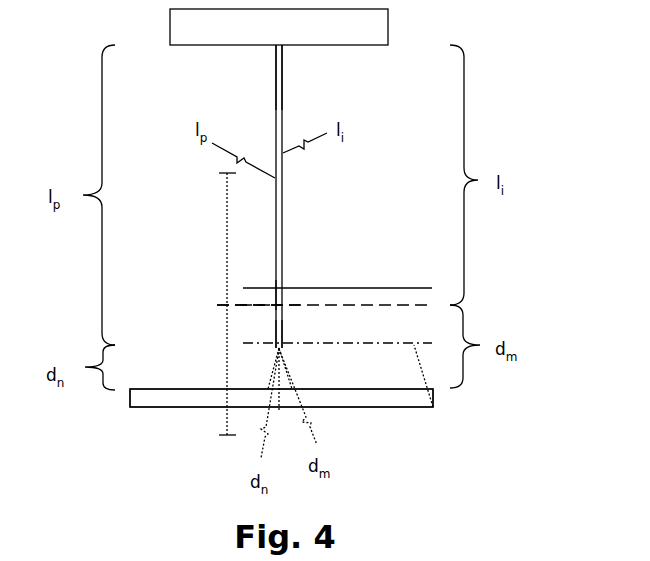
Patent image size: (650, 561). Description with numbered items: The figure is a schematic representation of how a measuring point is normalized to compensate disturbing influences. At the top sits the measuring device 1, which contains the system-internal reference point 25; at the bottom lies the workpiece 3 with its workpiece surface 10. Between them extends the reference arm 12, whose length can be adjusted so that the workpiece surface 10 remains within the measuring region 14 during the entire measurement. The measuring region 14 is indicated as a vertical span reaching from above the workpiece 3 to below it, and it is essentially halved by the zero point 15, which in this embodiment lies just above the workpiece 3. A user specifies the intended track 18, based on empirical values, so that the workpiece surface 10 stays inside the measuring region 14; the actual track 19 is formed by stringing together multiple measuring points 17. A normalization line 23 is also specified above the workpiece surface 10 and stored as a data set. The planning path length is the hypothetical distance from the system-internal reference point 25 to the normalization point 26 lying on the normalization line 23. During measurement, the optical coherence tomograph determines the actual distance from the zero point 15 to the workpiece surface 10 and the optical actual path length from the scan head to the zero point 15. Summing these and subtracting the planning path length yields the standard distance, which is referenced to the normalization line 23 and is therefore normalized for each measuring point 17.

The measuring device 1 is at (279, 27).
The workpiece 3 is at (277, 451).
The workpiece surface 10 is at (281, 452).
The reference arm 12 is at (340, 227).
The measuring region 14 is at (184, 299).
The zero point 15 is at (233, 253).
The measuring point 17 is at (205, 336).
The intended track 18 is at (344, 243).
The actual track 19 is at (324, 253).
The normalization line 23 is at (361, 418).
The system-internal reference point 25 is at (298, 77).
The normalization point 26 is at (336, 402).